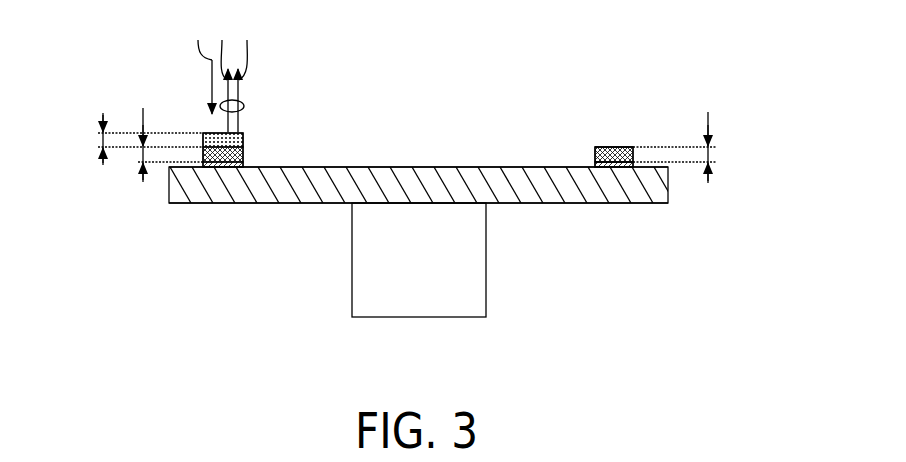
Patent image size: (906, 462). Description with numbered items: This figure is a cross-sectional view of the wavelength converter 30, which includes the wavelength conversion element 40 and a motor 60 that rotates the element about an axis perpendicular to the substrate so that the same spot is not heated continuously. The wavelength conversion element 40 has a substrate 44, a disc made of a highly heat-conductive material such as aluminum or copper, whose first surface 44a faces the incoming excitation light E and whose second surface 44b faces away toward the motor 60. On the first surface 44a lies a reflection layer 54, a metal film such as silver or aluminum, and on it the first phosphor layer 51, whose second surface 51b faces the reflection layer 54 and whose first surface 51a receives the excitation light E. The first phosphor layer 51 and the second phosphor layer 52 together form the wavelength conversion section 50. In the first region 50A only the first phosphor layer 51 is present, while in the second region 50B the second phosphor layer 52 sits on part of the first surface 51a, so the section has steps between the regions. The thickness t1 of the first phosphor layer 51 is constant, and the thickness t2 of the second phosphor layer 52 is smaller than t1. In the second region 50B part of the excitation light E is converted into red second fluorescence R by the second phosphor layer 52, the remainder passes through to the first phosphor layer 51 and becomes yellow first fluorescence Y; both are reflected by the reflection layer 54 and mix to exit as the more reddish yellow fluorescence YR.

The wavelength converter 30 is at (410, 114).
The wavelength conversion element 40 is at (295, 215).
The substrate 44 is at (660, 184).
The first surface 44a is at (490, 167).
The second surface 44b is at (645, 203).
The wavelength conversion section 50 is at (452, 156).
The first region 50A is at (605, 139).
The second region 50B is at (189, 82).
The first phosphor layer 51 is at (243, 150).
The first surface 51a is at (618, 147).
The second surface 51b is at (613, 163).
The second phosphor layer 52 is at (243, 133).
The reflection layer 54 is at (243, 164).
The motor 60 is at (478, 273).
The thickness of the first phosphor layer t1 is at (423, 135).
The thickness of the second phosphor layer t2 is at (100, 126).
The excitation light E is at (202, 66).
The second fluorescence R is at (222, 75).
The first fluorescence Y is at (245, 75).
The yellow fluorescence YR is at (244, 103).